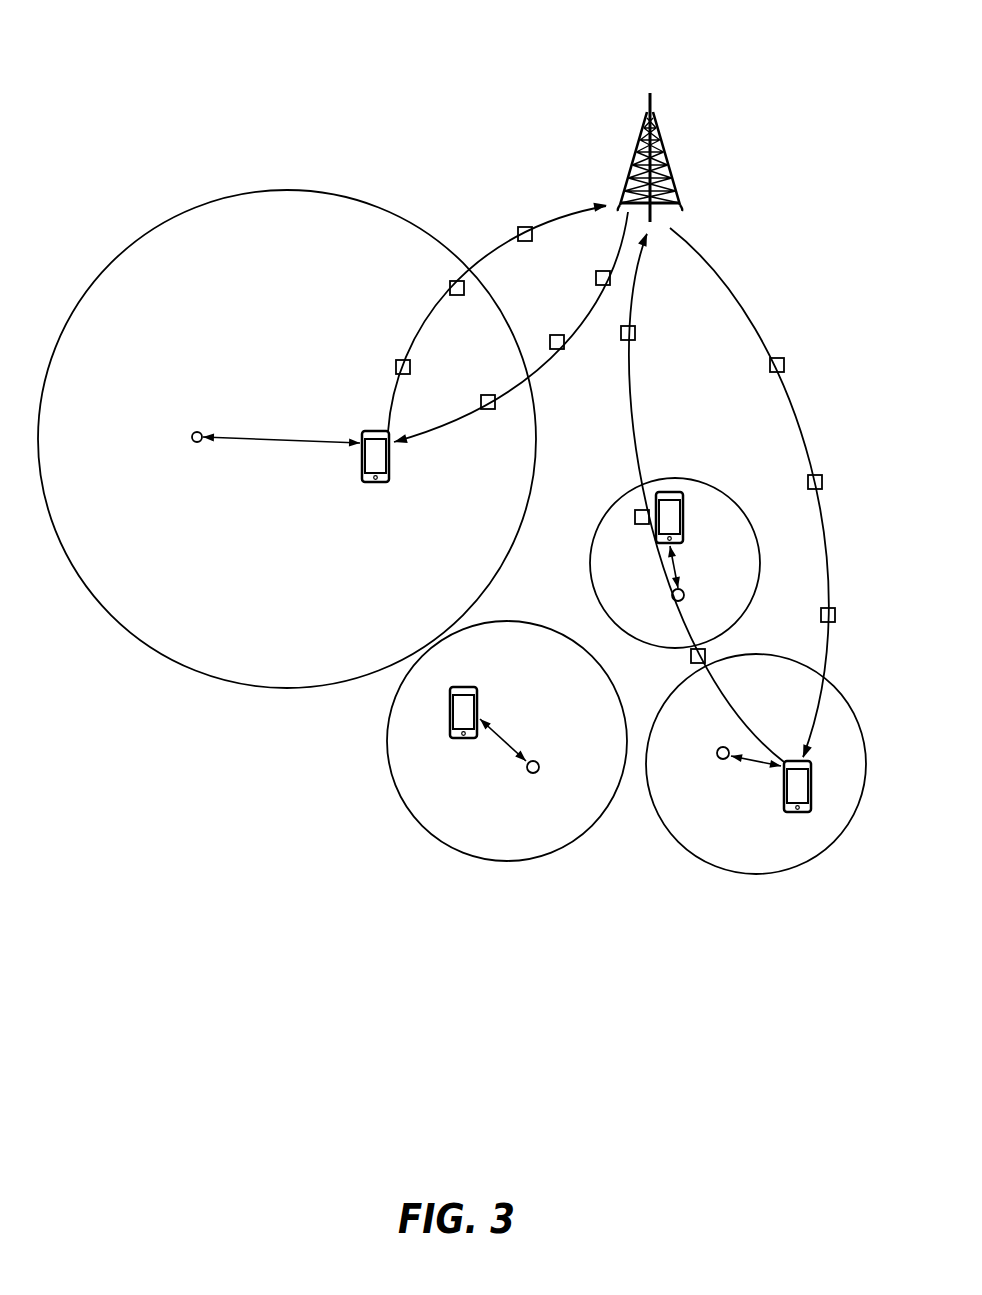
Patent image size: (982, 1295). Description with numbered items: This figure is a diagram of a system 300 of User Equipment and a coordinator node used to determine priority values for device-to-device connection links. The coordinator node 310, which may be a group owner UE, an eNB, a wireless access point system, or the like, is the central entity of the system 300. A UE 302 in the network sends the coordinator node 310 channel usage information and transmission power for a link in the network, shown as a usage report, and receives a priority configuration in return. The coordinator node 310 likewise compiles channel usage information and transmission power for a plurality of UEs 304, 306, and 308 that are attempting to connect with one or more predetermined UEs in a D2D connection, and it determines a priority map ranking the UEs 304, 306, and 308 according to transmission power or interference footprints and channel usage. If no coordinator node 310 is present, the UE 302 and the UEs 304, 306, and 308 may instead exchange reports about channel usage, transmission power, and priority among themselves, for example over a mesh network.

The system 300 is at (722, 30).
The UE 302 is at (232, 193).
The UE 304 is at (690, 480).
The UE 306 is at (458, 858).
The UE 308 is at (733, 873).
The coordinator node 310 is at (680, 203).